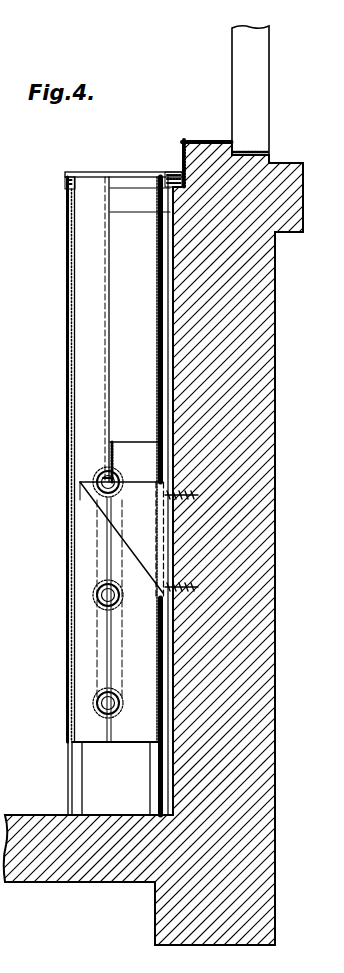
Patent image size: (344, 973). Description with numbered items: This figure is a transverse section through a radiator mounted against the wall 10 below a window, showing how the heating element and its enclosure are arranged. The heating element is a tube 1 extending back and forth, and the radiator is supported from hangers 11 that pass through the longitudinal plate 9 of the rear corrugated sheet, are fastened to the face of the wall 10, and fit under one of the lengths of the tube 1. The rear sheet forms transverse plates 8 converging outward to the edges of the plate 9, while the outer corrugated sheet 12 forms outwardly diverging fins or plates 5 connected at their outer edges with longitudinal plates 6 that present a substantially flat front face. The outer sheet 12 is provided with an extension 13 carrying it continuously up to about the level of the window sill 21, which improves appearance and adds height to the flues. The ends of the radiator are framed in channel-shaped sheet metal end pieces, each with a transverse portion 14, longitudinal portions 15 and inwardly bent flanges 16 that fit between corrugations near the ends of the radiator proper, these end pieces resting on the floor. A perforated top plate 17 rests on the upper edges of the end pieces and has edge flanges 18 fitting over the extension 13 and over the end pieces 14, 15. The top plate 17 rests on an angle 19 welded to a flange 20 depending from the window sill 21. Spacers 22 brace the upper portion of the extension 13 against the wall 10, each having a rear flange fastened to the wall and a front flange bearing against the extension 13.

The tube 1 is at (95, 479).
The fins or plates 5 is at (102, 619).
The longitudinal plates 6 is at (80, 546).
The transverse plates 8 is at (118, 443).
The longitudinal plate 9 is at (159, 466).
The wall 10 is at (193, 468).
The hangers 11 is at (121, 537).
The outer corrugated sheet 12 is at (70, 628).
The extension 13 is at (67, 268).
The transverse portion 14 is at (125, 778).
The longitudinal portions 15 is at (68, 777).
The inwardly bent flanges 16 is at (84, 794).
The top plate 17 is at (101, 172).
The edge flanges 18 is at (63, 188).
The angle 19 is at (166, 182).
The flange 20 is at (183, 155).
The window sill 21 is at (196, 142).
The spacers 22 is at (137, 204).